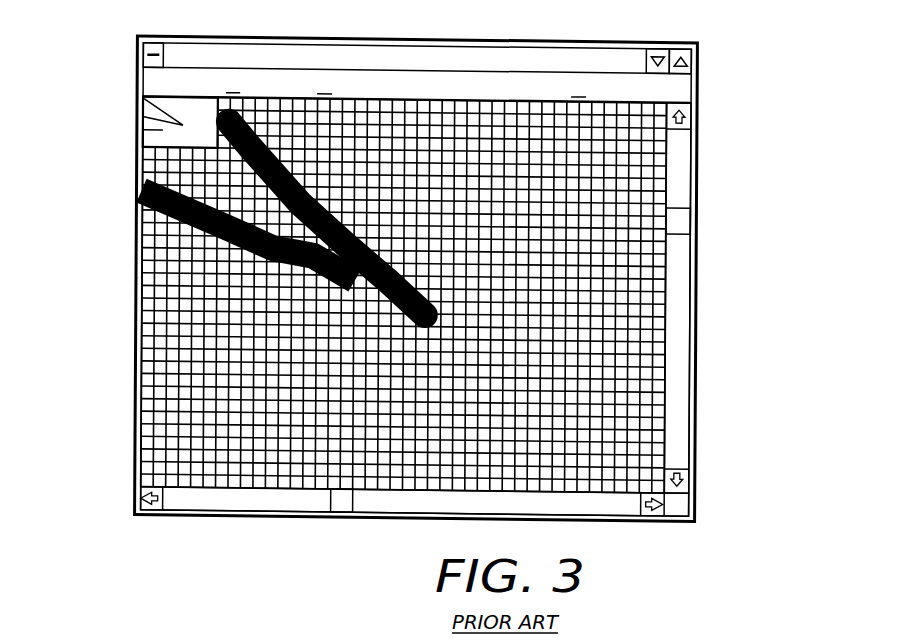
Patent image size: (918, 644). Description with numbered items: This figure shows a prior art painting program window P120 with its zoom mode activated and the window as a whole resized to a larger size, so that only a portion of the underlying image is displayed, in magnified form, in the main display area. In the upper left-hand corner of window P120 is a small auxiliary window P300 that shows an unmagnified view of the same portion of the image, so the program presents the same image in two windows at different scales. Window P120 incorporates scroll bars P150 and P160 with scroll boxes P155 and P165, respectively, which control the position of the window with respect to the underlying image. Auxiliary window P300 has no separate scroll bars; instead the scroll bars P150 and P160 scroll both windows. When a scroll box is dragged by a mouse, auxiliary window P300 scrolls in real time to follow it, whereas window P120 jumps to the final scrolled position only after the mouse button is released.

The painting program window P120 is at (462, 83).
The scroll bar P150 is at (680, 358).
The scroll box P155 is at (680, 224).
The scroll bar P160 is at (608, 507).
The scroll box P165 is at (341, 506).
The auxiliary window P300 is at (143, 134).